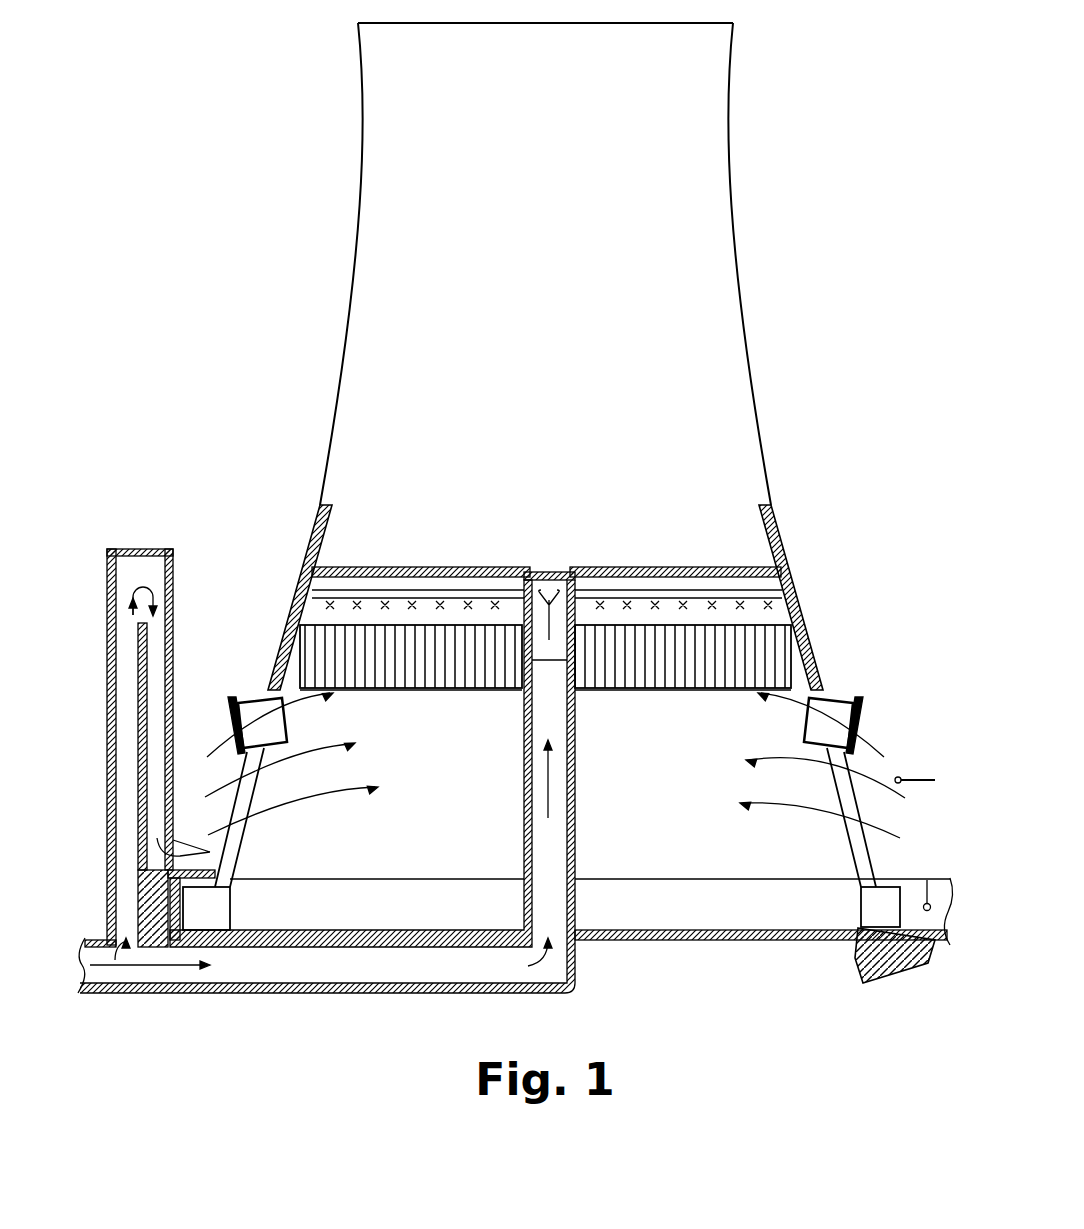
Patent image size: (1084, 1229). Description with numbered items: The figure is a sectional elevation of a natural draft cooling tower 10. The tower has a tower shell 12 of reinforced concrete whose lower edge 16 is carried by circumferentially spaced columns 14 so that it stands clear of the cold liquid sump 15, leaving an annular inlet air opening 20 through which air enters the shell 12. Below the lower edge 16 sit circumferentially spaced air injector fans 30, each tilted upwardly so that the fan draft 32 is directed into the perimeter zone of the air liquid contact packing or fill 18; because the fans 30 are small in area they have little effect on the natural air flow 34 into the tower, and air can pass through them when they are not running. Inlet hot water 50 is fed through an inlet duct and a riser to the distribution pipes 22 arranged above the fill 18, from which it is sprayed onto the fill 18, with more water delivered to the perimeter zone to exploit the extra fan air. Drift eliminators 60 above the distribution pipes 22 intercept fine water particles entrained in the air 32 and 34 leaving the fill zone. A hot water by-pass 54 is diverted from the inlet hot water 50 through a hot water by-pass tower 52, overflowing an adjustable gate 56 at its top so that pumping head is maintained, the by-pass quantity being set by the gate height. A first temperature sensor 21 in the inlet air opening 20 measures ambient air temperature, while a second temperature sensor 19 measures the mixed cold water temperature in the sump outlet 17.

The natural draft cooling tower 10 is at (230, 263).
The tower shell 12 is at (757, 393).
The columns 14 is at (852, 776).
The cold liquid sump 15 is at (668, 905).
The lower edge 16 is at (716, 690).
The sump outlet 17 is at (943, 937).
The fill 18 is at (420, 660).
The second temperature sensor 19 is at (930, 862).
The annular inlet air opening 20 is at (222, 812).
The first temperature sensor 21 is at (926, 778).
The distribution pipes 22 is at (390, 597).
The air injector fans 30 is at (253, 700).
The fan draft 32 is at (320, 700).
The air flow 34 is at (342, 797).
The inlet hot water 50 is at (326, 782).
The hot water by-pass tower 52 is at (175, 586).
The hot water by-pass 54 is at (252, 862).
The adjustable gate 56 is at (138, 630).
The drift eliminators 60 is at (445, 567).